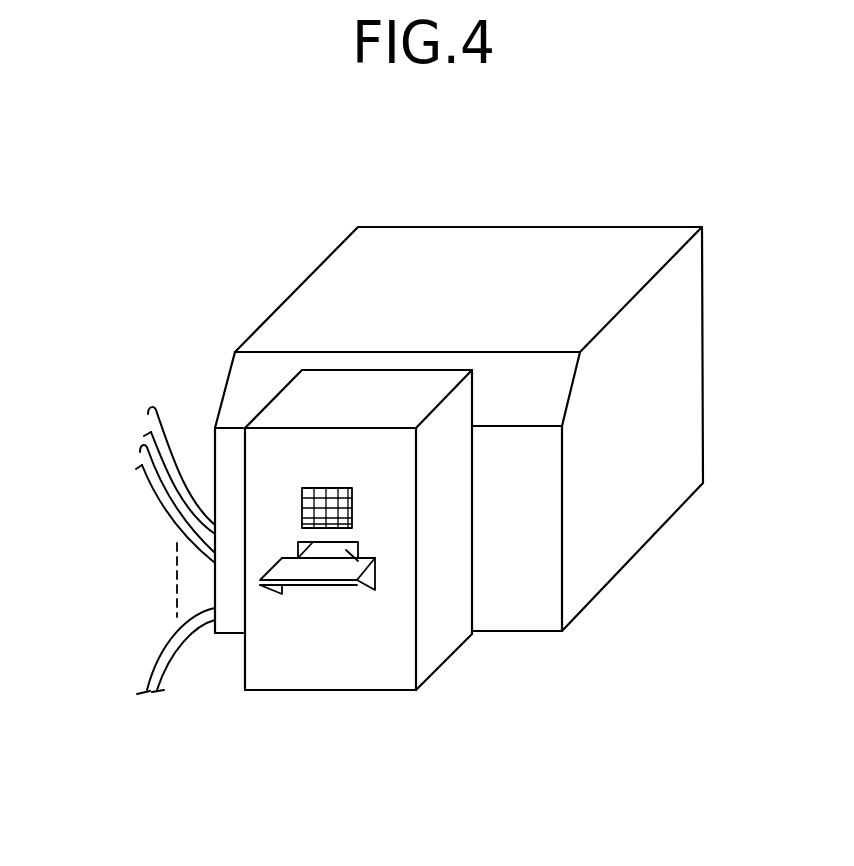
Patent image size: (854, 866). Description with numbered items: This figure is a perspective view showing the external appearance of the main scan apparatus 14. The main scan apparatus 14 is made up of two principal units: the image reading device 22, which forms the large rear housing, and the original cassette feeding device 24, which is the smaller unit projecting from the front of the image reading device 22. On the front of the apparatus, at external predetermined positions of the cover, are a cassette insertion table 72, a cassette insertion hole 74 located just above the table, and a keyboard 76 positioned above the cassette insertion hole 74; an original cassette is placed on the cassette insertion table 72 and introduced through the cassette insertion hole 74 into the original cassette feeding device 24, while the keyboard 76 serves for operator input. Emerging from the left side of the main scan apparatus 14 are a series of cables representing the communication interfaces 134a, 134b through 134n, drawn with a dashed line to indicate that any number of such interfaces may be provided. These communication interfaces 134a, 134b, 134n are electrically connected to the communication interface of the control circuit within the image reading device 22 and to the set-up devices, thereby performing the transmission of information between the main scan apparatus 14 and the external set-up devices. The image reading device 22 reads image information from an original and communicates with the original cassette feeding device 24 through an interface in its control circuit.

The main scan apparatus 14 is at (686, 117).
The image reading device 22 is at (707, 302).
The original cassette feeding device 24 is at (455, 659).
The cassette insertion table 72 is at (273, 592).
The cassette insertion hole 74 is at (373, 592).
The keyboard 76 is at (352, 515).
The communication interface 134a is at (156, 438).
The communication interface 134b is at (150, 482).
The communication interface 134n is at (158, 653).